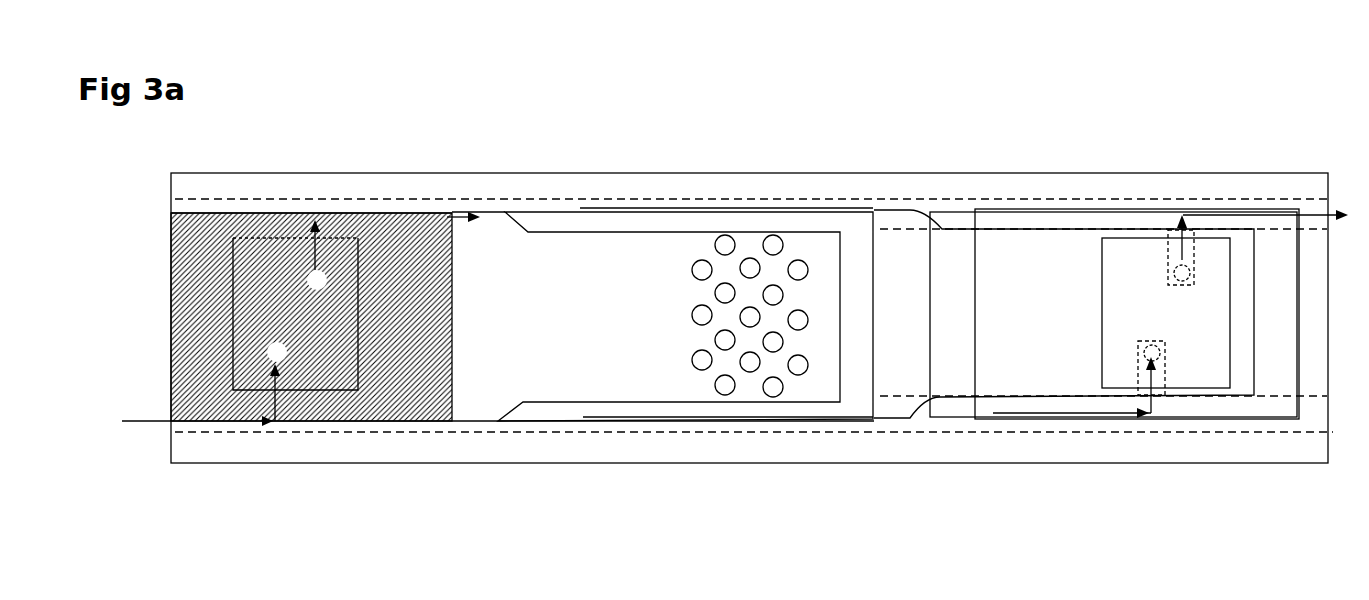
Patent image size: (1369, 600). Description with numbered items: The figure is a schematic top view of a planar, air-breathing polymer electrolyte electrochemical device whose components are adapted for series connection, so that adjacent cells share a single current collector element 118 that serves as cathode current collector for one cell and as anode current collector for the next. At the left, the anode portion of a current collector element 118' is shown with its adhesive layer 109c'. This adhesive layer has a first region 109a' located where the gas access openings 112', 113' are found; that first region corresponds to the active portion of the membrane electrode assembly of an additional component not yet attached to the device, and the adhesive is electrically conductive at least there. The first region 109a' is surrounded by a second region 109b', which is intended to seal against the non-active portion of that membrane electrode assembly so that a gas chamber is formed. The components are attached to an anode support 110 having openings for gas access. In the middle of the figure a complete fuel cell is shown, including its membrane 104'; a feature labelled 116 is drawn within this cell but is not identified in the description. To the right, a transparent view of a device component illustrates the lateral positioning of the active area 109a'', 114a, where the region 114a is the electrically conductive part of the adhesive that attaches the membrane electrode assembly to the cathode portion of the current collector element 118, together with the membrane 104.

The adhesive layer 109c' is at (311, 116).
The second region 109b' is at (311, 263).
The first region 109a' is at (332, 248).
The opening 112' is at (223, 433).
The opening 113' is at (356, 372).
The current collector element 118' is at (496, 163).
The membrane 104' is at (685, 249).
The anode support 110 is at (722, 187).
The pillars 116 is at (773, 245).
The current collector element 118 is at (1092, 257).
The membrane 104 is at (1114, 257).
The first region 109a'' is at (1227, 236).
The region 114a is at (1170, 314).